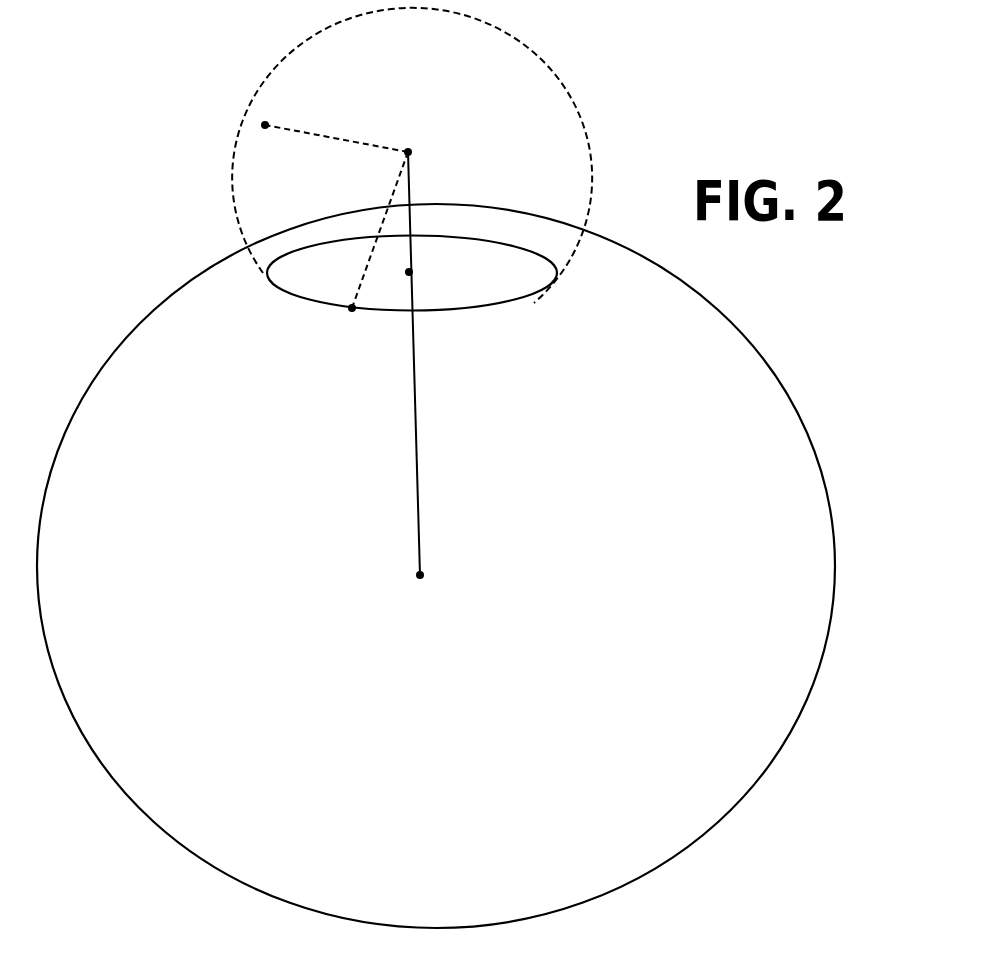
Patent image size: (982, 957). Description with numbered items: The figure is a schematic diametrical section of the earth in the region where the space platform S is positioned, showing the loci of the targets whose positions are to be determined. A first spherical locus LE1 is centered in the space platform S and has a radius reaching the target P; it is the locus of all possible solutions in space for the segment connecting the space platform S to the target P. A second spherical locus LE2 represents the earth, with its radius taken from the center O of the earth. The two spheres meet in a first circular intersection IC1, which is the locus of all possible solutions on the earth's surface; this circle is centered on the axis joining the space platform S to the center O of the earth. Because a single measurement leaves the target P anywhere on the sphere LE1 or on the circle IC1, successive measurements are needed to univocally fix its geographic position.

The first spherical locus LE1 is at (323, 29).
The second spherical locus LE2 is at (122, 794).
The first circular intersection IC1 is at (497, 300).
The space platform S is at (354, 350).
The center of the earth O is at (422, 593).
The target P is at (262, 124).